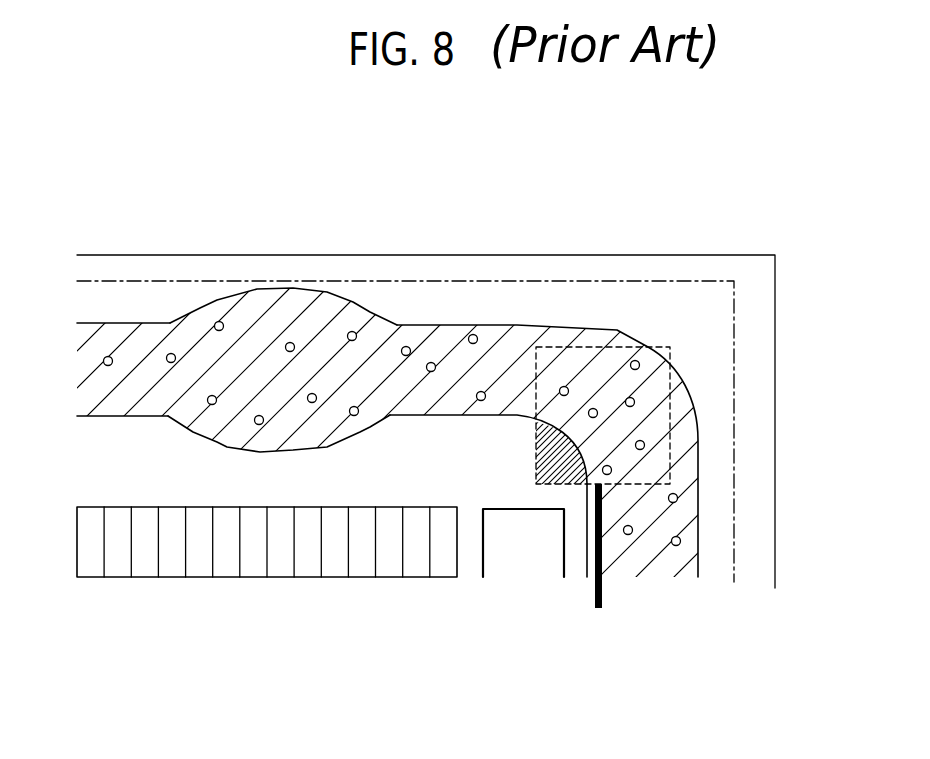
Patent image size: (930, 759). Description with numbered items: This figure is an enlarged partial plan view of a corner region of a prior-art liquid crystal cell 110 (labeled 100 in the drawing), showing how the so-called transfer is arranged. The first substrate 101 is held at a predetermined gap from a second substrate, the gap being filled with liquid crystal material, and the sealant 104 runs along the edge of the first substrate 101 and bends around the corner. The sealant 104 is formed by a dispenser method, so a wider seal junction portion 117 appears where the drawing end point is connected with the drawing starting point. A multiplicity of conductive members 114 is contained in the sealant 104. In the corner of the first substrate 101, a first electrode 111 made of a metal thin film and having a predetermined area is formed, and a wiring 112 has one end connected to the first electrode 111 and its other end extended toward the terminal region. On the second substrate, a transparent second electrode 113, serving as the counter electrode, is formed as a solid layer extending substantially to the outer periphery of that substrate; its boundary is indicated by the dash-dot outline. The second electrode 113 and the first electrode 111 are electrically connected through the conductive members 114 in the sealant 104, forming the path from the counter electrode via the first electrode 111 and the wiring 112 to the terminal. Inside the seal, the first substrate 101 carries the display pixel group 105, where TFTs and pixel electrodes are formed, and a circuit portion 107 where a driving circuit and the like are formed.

The display device 100 is at (135, 150).
The liquid crystal cell 110 is at (175, 84).
The first substrate 101 is at (107, 254).
The second electrode 113 is at (705, 280).
The first electrode 111 is at (663, 352).
The seal junction portion 117 is at (268, 298).
The conductive members 114 is at (562, 387).
The sealant 104 is at (687, 510).
The wiring 112 is at (602, 595).
The display pixel group 105 is at (151, 577).
The circuit portion 107 is at (520, 552).